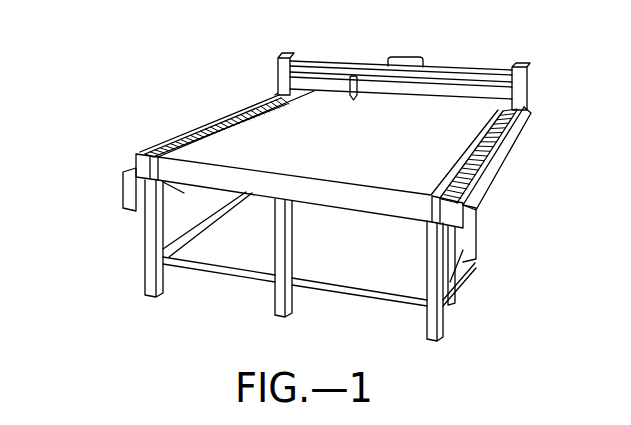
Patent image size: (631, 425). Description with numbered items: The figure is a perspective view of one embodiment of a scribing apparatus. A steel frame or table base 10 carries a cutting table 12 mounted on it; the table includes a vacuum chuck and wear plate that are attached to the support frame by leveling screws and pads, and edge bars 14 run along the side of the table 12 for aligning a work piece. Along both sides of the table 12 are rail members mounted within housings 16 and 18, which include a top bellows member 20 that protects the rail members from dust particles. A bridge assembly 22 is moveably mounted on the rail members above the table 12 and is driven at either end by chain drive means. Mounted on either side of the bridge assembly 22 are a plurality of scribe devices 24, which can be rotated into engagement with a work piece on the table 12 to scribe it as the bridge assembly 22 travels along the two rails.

The table base 10 is at (139, 256).
The cutting table 12 is at (368, 150).
The edge bars 14 is at (177, 143).
The housing 16 is at (458, 218).
The housing 18 is at (134, 166).
The top bellows member 20 is at (484, 158).
The bridge assembly 22 is at (447, 61).
The scribe devices 24 is at (354, 76).